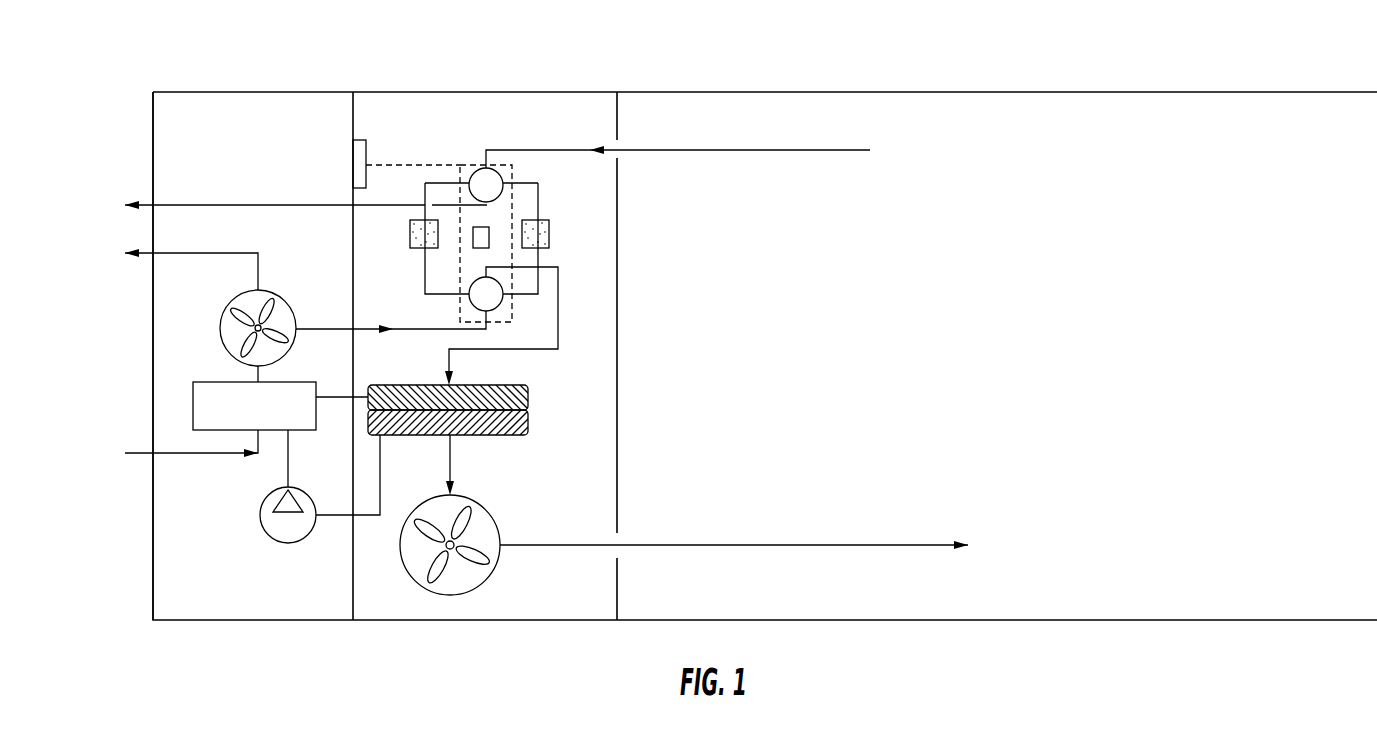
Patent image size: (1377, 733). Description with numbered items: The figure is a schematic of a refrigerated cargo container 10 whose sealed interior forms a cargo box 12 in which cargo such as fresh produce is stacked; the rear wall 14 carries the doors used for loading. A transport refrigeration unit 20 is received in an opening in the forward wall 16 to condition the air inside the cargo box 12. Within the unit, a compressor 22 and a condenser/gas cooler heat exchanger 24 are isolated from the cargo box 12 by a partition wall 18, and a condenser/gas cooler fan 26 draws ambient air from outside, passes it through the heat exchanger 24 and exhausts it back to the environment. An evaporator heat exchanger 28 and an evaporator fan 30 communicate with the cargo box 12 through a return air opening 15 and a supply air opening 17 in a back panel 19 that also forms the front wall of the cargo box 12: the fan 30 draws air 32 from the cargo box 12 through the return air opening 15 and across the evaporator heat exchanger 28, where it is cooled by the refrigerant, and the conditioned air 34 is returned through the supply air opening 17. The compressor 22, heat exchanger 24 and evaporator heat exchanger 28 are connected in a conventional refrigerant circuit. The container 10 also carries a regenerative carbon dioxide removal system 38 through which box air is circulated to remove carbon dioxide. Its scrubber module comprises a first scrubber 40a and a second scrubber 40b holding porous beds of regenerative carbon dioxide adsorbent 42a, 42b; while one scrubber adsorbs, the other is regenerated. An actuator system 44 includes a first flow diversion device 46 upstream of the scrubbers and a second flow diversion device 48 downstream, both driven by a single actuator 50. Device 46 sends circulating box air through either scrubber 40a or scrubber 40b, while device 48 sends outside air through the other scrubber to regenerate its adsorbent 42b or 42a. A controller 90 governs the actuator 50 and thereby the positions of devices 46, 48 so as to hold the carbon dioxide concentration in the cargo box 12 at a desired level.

The refrigerated cargo container 10 is at (1000, 66).
The cargo box 12 is at (1037, 326).
The rear wall 14 is at (1376, 300).
The return air opening 15 is at (617, 138).
The forward wall 16 is at (153, 128).
The supply air opening 17 is at (617, 558).
The partition wall 18 is at (353, 290).
The back panel 19 is at (617, 215).
The transport refrigeration unit 20 is at (314, 600).
The compressor 22 is at (300, 538).
The condenser/gas cooler heat exchanger 24 is at (203, 382).
The condenser/gas cooler fan 26 is at (237, 293).
The evaporator heat exchanger 28 is at (528, 386).
The evaporator fan 30 is at (490, 510).
The air 32 is at (537, 149).
The conditioned air 34 is at (575, 548).
The regenerative carbon dioxide removal system 38 is at (436, 141).
The first scrubber 40a is at (400, 249).
The second scrubber 40b is at (562, 231).
The regenerative carbon dioxide adsorbent 42a is at (424, 236).
The regenerative carbon dioxide adsorbent material 42b is at (537, 240).
The actuator system 44 is at (471, 162).
The first flow diversion device 46 is at (501, 178).
The second flow diversion device 48 is at (500, 304).
The single actuator 50 is at (489, 227).
The controller 90 is at (366, 172).